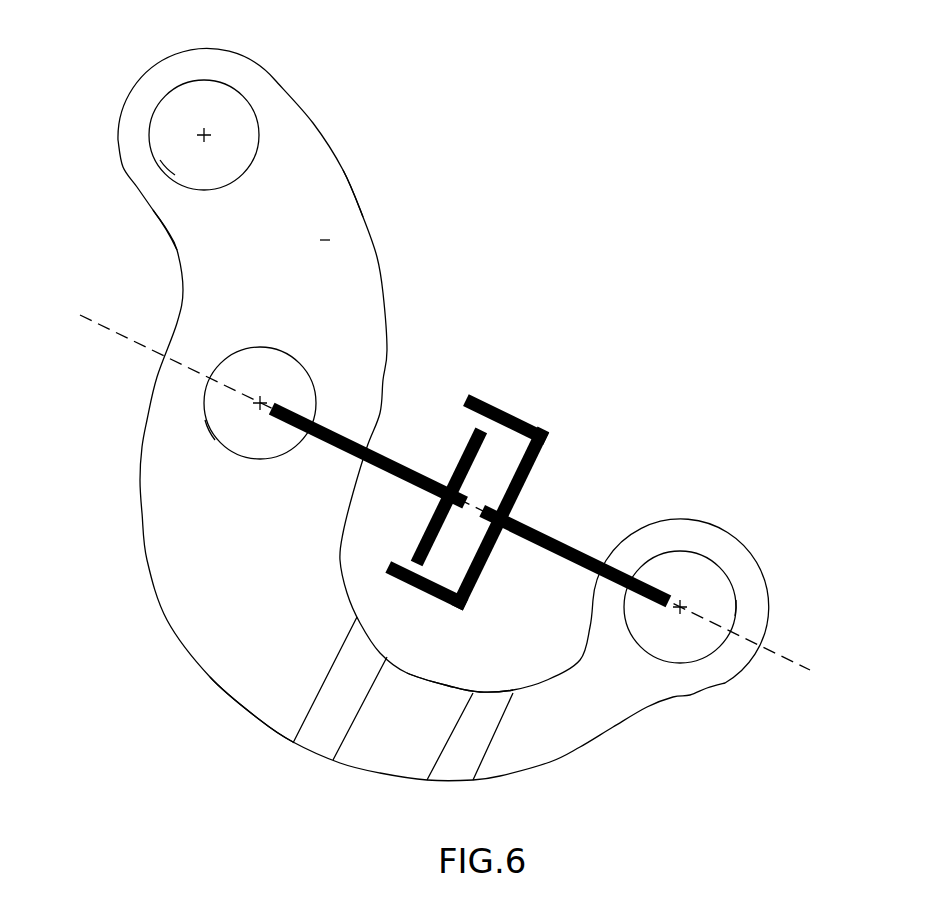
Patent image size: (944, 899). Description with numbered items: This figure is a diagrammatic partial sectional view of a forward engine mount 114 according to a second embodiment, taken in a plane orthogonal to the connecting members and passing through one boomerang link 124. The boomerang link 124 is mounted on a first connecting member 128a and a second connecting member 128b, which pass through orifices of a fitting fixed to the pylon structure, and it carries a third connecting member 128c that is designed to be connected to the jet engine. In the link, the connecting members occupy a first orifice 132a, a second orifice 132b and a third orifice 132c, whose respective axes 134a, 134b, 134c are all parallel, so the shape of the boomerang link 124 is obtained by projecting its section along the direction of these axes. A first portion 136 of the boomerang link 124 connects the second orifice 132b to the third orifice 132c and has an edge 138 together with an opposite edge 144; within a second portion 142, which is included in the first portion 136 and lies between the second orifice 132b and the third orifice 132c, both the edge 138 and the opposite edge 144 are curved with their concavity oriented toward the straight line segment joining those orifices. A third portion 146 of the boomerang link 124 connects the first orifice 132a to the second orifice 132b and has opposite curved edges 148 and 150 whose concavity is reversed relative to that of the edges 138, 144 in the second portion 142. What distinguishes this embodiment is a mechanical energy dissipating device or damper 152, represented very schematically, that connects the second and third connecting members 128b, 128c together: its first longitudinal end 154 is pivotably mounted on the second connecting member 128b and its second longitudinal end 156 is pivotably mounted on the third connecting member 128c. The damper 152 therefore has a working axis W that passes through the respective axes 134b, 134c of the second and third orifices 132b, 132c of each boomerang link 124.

The forward engine mount 114 is at (683, 160).
The boomerang link 124 is at (325, 131).
The first connecting member 128a is at (167, 125).
The second connecting member 128b is at (261, 357).
The third connecting member 128c is at (708, 638).
The first orifice 132a is at (157, 154).
The second orifice 132b is at (210, 414).
The third orifice 132c is at (735, 598).
The axis of first orifice 134a is at (206, 130).
The axis of second orifice 134b is at (266, 398).
The axis of third orifice 134c is at (687, 606).
The first portion of boomerang link 136 is at (265, 690).
The edge 138 is at (453, 687).
The second portion of boomerang link 142 is at (235, 698).
The opposite edge 144 is at (340, 767).
The third portion of boomerang link 146 is at (325, 235).
The curved edge 148 is at (346, 167).
The curved edge 150 is at (165, 230).
The damper 152 is at (538, 420).
The first longitudinal end of damper 154 is at (285, 427).
The second longitudinal end of damper 156 is at (660, 615).
The working axis W is at (117, 330).